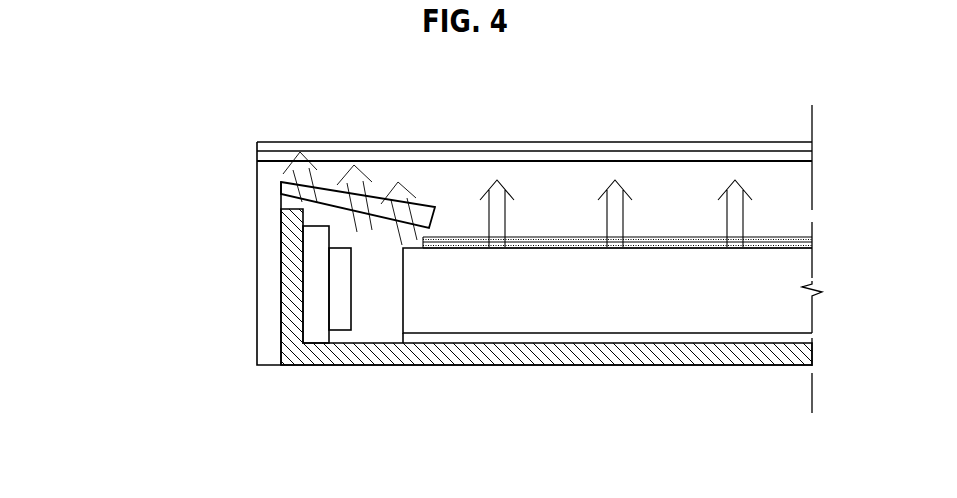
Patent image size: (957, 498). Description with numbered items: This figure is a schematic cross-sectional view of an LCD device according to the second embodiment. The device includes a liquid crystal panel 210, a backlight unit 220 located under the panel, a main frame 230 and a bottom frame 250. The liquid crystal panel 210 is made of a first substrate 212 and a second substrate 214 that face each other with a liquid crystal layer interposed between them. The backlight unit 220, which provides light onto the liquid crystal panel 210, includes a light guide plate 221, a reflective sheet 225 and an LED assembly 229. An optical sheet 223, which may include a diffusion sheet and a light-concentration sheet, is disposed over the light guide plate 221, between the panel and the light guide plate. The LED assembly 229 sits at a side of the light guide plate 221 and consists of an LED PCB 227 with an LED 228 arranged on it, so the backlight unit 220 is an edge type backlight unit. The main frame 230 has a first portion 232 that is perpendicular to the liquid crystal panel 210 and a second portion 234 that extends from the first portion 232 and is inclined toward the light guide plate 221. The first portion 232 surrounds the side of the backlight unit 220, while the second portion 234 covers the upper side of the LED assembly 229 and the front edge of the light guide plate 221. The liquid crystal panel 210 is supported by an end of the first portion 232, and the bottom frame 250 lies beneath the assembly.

The liquid crystal panel 210 is at (534, 108).
The first substrate 212 is at (648, 88).
The second substrate 214 is at (635, 148).
The backlight unit 220 is at (549, 339).
The light guide plate 221 is at (453, 302).
The optical sheet 223 is at (617, 325).
The reflective sheet 225 is at (521, 337).
The LED PCB 227 is at (318, 310).
The LED 228 is at (341, 308).
The LED assembly 229 is at (332, 344).
The main frame 230 is at (268, 258).
The first portion 232 is at (268, 289).
The second portion 234 is at (330, 194).
The bottom frame 250 is at (668, 353).